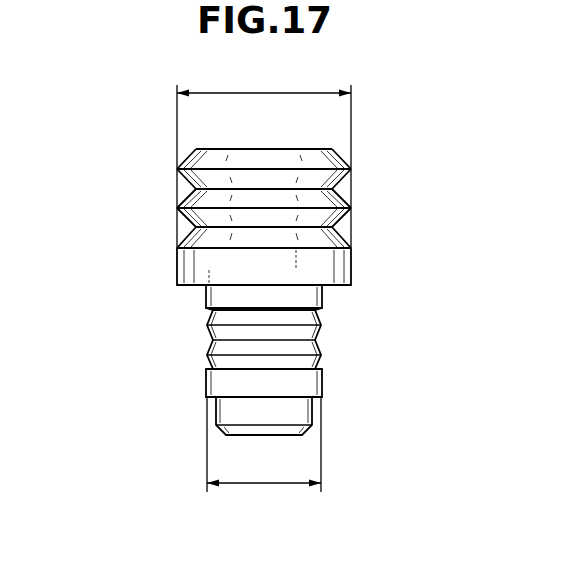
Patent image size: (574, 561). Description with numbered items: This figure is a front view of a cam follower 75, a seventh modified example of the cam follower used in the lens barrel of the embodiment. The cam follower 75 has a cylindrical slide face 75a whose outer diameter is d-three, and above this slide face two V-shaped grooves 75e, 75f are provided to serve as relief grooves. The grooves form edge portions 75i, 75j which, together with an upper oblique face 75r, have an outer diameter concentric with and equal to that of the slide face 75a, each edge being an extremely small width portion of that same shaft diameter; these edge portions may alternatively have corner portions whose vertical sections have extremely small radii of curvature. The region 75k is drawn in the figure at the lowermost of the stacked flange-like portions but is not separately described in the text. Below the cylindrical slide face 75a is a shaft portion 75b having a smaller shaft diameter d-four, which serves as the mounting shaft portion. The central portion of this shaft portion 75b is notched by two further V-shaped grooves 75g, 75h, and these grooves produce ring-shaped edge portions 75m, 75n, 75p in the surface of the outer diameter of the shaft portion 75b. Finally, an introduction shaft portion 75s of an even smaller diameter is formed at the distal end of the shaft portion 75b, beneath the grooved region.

The cam follower 75 is at (314, 137).
The upper oblique face 75r is at (352, 157).
The edge portion 75i is at (177, 169).
The V-shaped groove 75e is at (352, 194).
The edge portion 75j is at (177, 208).
The V-shaped groove 75f is at (352, 233).
The third flange 75k is at (177, 248).
The slide face 75a is at (352, 273).
The shaft portion 75b is at (323, 301).
The ring-shaped edge portion 75m is at (206, 308).
The V-shaped groove 75g is at (322, 328).
The ring-shaped edge portion 75n is at (206, 340).
The V-shaped groove 75h is at (322, 357).
The ring-shaped edge portion 75p is at (206, 370).
The introduction shaft portion 75s is at (313, 415).